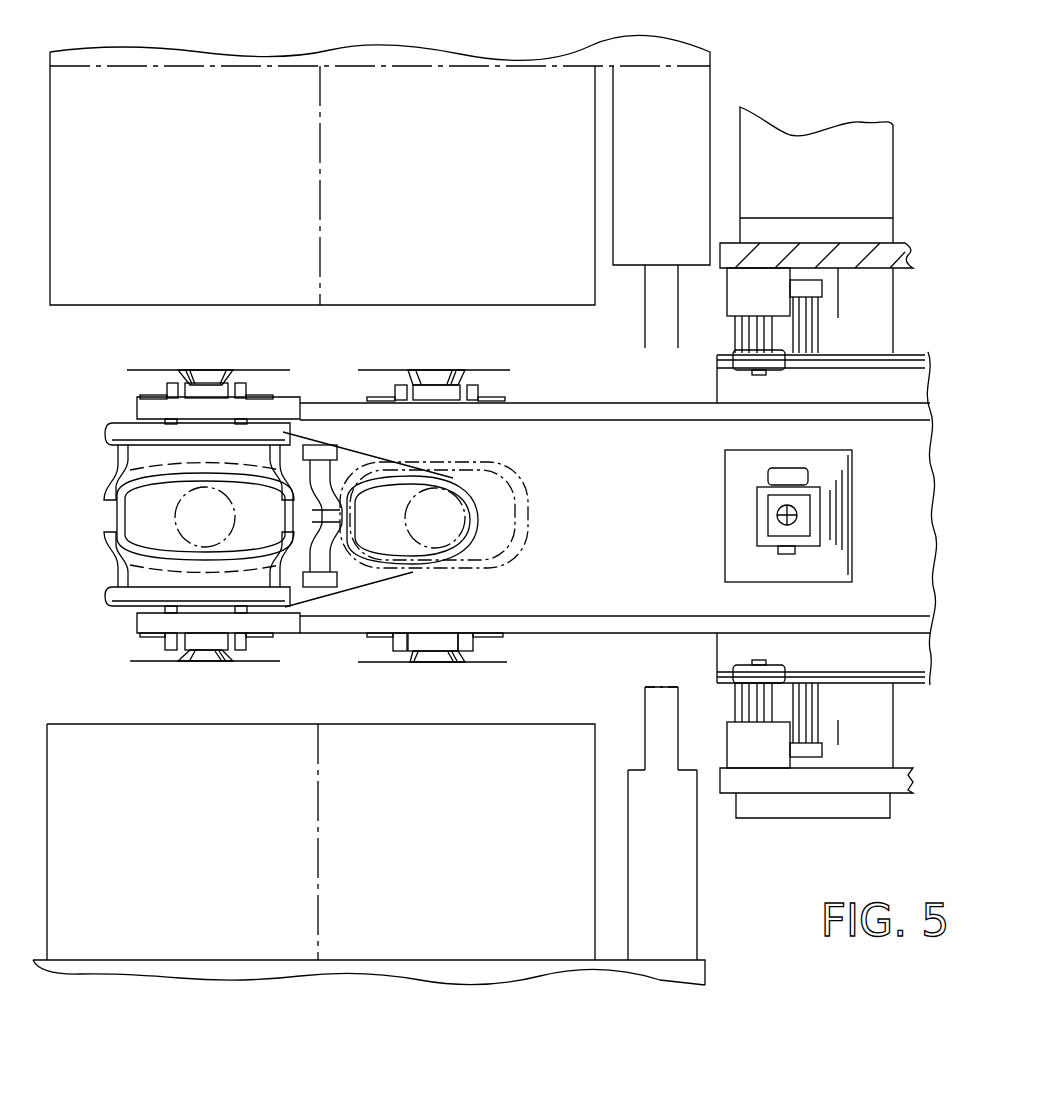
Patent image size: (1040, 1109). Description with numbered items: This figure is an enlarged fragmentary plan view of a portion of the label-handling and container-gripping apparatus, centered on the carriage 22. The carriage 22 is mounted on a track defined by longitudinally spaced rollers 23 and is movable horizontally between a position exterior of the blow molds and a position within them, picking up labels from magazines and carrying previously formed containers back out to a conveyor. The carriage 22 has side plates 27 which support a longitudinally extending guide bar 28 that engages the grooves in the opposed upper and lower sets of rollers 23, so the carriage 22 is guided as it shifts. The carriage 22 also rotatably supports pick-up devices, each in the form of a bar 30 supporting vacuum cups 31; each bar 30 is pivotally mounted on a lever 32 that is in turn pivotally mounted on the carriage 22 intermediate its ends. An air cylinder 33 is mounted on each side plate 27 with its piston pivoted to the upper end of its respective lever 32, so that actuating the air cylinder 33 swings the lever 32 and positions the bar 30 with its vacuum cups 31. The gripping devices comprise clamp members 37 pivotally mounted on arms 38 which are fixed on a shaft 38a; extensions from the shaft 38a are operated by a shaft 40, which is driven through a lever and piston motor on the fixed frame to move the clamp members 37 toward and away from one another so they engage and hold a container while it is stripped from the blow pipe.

The carriage 22 is at (912, 535).
The rollers 23 is at (785, 370).
The side plates 27 is at (595, 405).
The guide bar 28 is at (893, 680).
The bar 30 is at (215, 385).
The vacuum cups 31 is at (410, 373).
The lever 32 is at (167, 390).
The air cylinder 33 is at (838, 322).
The clamp members 37 is at (135, 548).
The arms 38 is at (95, 535).
The shaft 38a is at (105, 433).
The shaft 40 is at (725, 513).